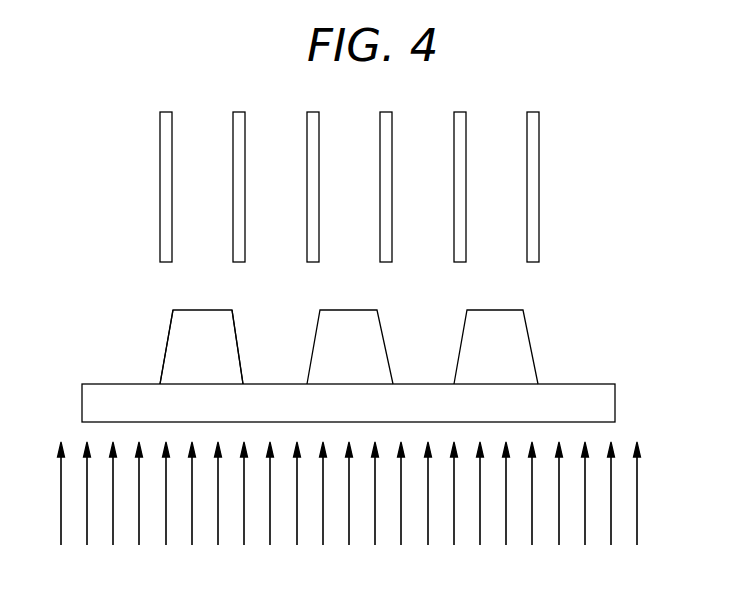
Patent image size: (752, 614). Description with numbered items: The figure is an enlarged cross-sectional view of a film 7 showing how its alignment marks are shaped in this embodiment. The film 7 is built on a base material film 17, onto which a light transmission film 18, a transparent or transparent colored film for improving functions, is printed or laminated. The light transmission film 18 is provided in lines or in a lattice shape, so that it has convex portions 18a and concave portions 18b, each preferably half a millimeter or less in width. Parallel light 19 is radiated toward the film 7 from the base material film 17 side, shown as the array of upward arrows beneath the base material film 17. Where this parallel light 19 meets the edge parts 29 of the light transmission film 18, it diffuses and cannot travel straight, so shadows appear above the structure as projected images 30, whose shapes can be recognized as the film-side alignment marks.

The film 7 is at (60, 310).
The base material film 17 is at (615, 403).
The light transmission film 18 is at (232, 310).
The convex portions 18a is at (184, 362).
The concave portions 18b is at (254, 362).
The parallel light 19 is at (637, 493).
The edge parts 29 is at (170, 325).
The projected images 30 is at (560, 112).